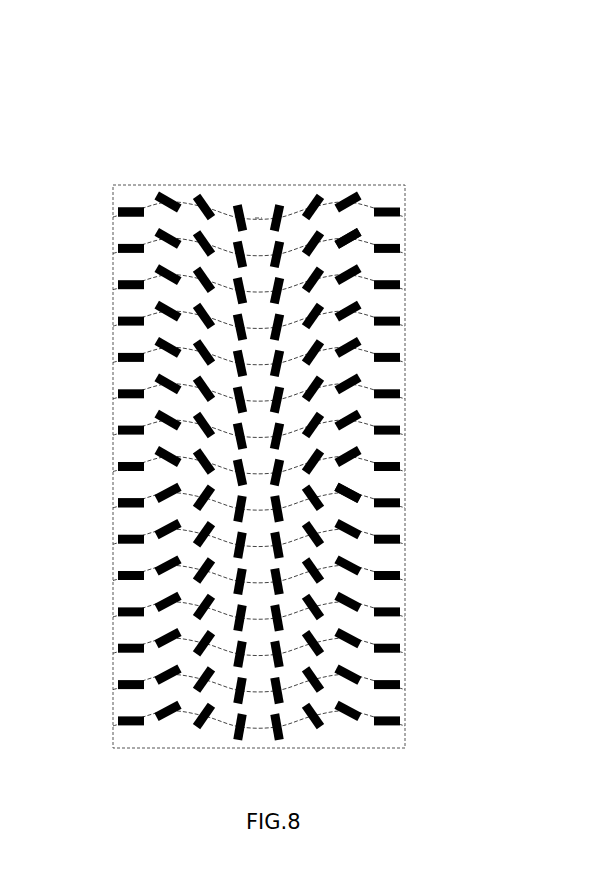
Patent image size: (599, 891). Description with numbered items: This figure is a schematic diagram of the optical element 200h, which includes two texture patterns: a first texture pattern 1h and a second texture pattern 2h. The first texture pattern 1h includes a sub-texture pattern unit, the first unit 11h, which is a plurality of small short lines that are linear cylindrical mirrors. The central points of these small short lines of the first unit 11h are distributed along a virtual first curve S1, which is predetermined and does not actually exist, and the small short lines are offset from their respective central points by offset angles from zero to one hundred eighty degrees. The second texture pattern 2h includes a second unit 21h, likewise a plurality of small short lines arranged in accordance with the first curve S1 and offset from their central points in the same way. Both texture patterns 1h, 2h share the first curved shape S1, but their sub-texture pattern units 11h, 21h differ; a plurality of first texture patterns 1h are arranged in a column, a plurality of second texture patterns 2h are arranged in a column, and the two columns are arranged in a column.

The optical element 200h is at (260, 110).
The first texture pattern 1h is at (142, 199).
The second texture pattern 2h is at (132, 499).
The first unit 11h is at (360, 233).
The second unit 21h is at (355, 493).
The first curve S1 is at (260, 217).